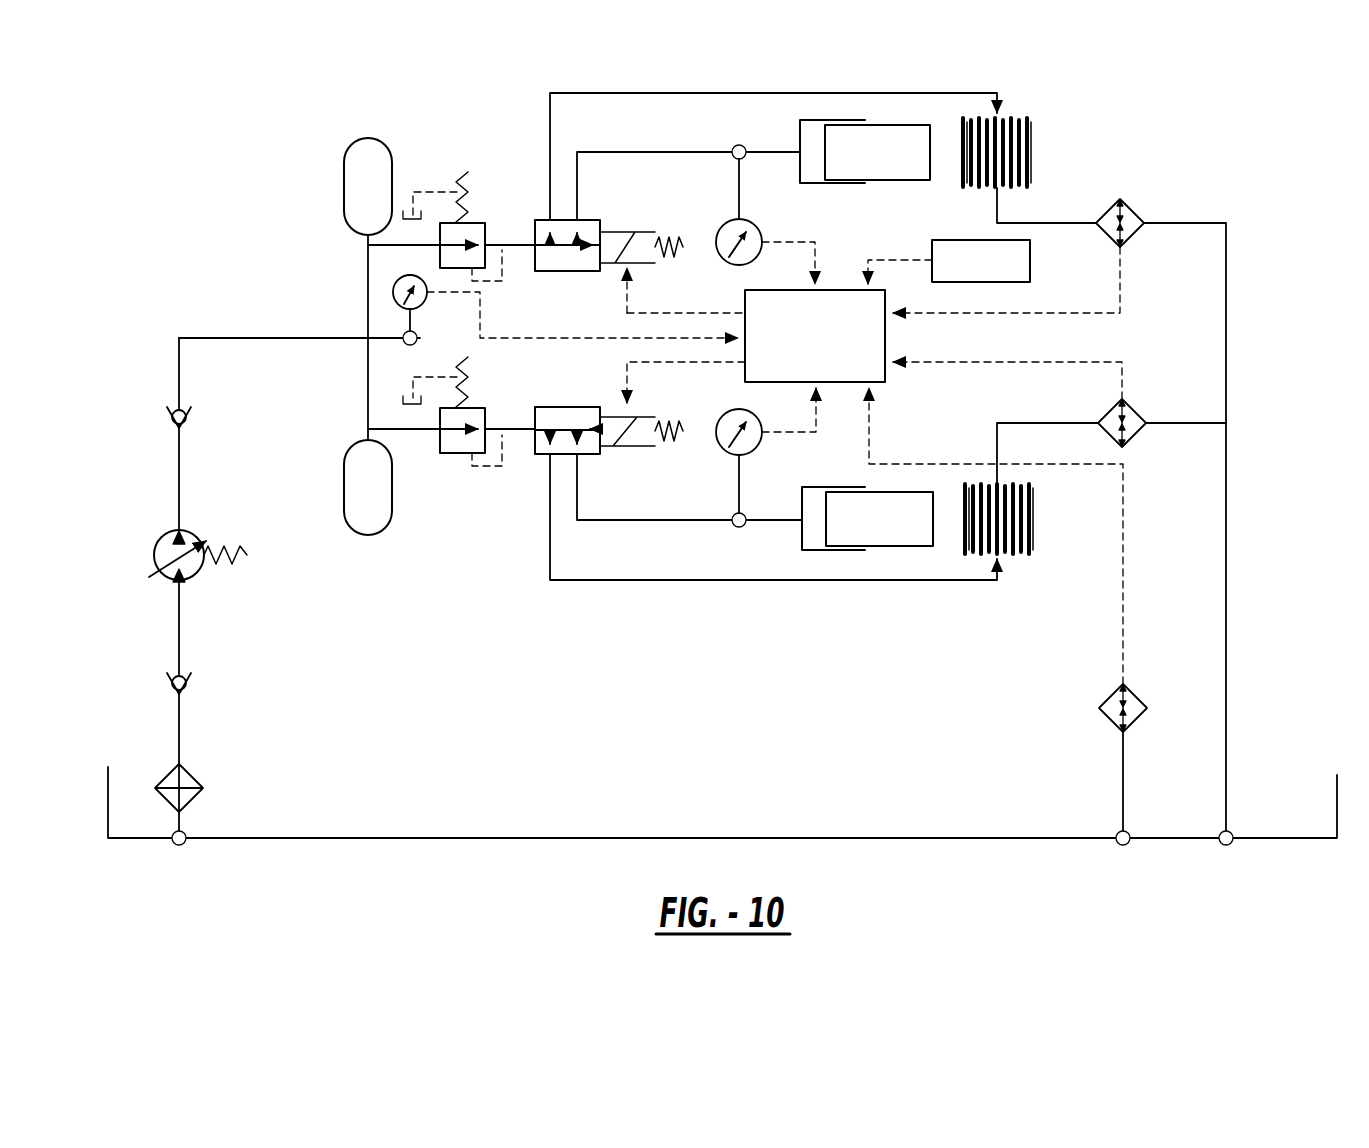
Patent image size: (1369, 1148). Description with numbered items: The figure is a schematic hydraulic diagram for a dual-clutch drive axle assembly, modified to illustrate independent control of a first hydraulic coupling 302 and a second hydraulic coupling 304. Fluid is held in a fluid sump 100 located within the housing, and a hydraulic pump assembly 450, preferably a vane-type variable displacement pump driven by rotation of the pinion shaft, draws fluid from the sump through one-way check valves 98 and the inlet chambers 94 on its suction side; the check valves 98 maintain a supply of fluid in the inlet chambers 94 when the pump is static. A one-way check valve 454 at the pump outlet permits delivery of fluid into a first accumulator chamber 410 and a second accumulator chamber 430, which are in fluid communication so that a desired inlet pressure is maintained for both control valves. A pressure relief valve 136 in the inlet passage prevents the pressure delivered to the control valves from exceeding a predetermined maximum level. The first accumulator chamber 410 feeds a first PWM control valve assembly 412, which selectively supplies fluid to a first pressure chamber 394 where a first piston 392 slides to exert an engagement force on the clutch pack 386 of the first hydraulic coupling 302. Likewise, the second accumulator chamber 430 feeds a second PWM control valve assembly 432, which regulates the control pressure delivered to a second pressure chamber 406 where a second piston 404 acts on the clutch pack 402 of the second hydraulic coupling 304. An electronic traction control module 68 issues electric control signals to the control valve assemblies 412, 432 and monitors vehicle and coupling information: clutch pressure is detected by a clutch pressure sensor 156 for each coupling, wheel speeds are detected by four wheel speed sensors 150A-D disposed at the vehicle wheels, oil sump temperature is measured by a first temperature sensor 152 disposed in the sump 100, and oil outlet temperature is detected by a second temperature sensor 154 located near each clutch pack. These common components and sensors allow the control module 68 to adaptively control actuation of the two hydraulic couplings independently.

The inlet chambers 94 is at (656, 683).
The fluid sump 100 is at (1279, 800).
The first accumulator chamber 410 is at (352, 152).
The second accumulator chamber 430 is at (352, 476).
The pressure relief valve 136 is at (477, 233).
The first PWM control valve assembly 412 is at (603, 211).
The second PWM control valve assembly 432 is at (603, 460).
The clutch pressure sensor 156 is at (718, 258).
The first piston 392 is at (877, 152).
The first pressure chamber 394 is at (810, 170).
The first hydraulic coupling 302 is at (902, 189).
The second piston 404 is at (860, 529).
The second pressure chamber 406 is at (812, 528).
The second hydraulic coupling 304 is at (887, 560).
The clutch pack 386 is at (1040, 145).
The clutch pack 402 is at (1028, 562).
The second temperature sensor 154 is at (1124, 215).
The first temperature sensor 152 is at (1128, 702).
The wheel speed sensors 150A-D is at (1030, 250).
The electronic traction control module 68 is at (886, 333).
The one-way check valve 454 is at (170, 410).
The one-way check valves 98 is at (170, 680).
The hydraulic pump assembly 450 is at (160, 536).